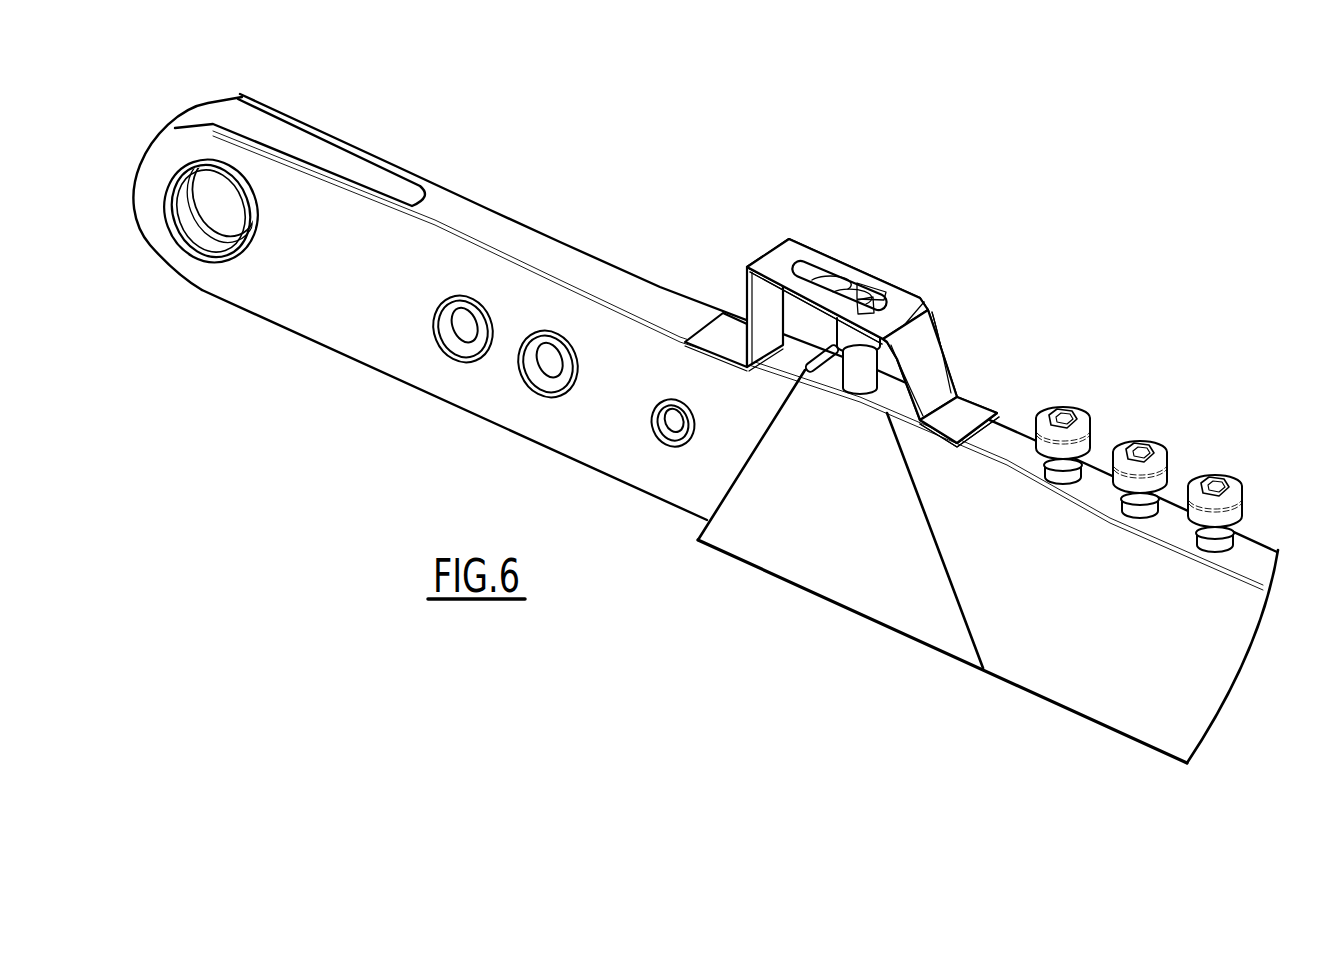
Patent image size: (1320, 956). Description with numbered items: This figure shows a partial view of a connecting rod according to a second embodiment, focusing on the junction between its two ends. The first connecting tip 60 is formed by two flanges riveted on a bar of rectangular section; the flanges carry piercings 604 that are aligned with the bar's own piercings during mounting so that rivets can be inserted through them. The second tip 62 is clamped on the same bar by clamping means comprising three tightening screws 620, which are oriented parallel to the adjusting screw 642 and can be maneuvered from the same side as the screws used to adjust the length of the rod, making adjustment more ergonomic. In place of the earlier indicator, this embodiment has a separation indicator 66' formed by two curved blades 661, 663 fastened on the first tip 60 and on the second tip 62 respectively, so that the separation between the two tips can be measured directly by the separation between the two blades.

The first connecting tip 60 is at (499, 183).
The piercings 604 is at (535, 372).
The second tip 62 is at (1003, 721).
The tightening screws 620 is at (1201, 478).
The adjusting screw 642 is at (860, 380).
The separation indicator 66' is at (842, 292).
The curved blade 661 is at (780, 257).
The curved blade 663 is at (922, 345).